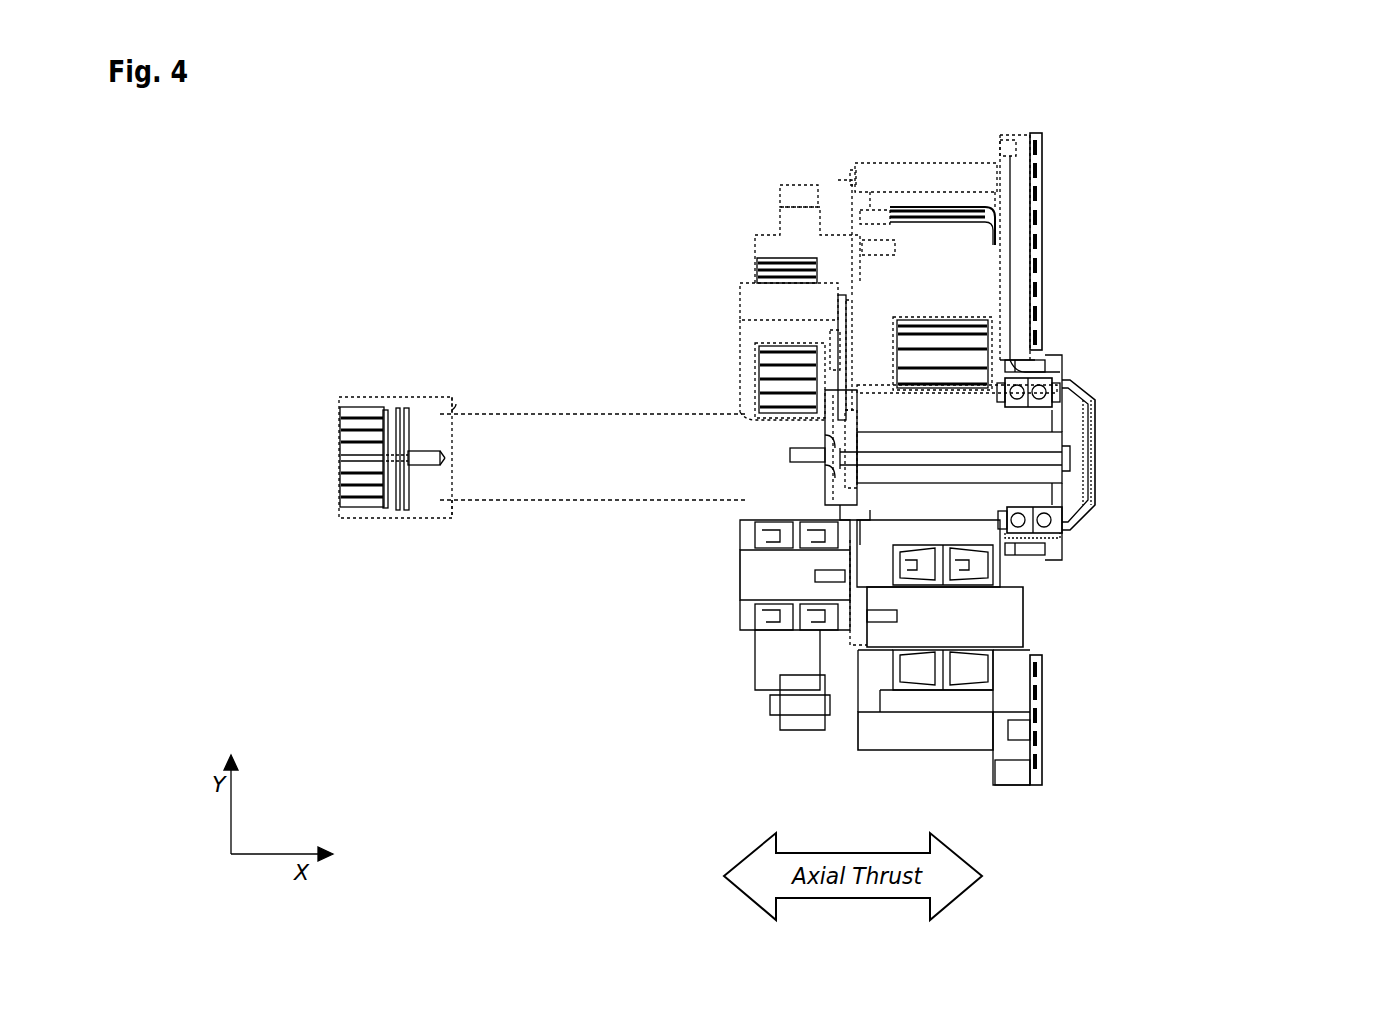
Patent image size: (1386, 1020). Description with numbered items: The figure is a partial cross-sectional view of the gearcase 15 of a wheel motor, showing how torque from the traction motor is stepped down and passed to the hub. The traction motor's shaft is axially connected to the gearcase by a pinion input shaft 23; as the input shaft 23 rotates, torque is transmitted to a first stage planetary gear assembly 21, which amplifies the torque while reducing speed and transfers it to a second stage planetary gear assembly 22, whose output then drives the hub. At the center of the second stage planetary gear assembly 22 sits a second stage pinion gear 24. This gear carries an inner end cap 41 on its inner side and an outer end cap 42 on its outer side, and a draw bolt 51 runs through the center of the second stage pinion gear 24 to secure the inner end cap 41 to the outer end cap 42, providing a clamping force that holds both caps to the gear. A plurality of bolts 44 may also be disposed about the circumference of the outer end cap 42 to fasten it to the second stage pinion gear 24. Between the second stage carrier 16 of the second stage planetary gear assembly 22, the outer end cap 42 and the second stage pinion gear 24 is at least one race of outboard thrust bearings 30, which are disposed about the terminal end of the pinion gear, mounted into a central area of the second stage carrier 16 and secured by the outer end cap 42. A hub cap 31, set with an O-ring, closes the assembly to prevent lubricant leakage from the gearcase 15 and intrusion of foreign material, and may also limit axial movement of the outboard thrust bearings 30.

The gearcase 15 is at (1195, 125).
The second stage carrier 16 is at (1013, 292).
The first stage planetary gear assembly 21 is at (753, 330).
The second stage planetary gear assembly 22 is at (962, 258).
The pinion input shaft 23 is at (497, 426).
The second stage pinion gear 24 is at (900, 496).
The outboard thrust bearings 30 is at (1068, 548).
The hub cap 31 is at (1074, 389).
The inner end cap 41 is at (843, 481).
The outer end cap 42 is at (1058, 480).
The bolts 44 is at (1065, 498).
The draw bolt 51 is at (940, 458).